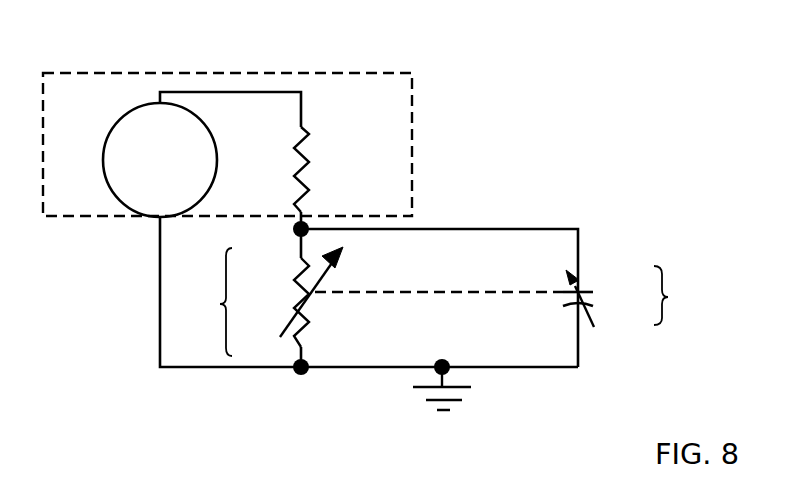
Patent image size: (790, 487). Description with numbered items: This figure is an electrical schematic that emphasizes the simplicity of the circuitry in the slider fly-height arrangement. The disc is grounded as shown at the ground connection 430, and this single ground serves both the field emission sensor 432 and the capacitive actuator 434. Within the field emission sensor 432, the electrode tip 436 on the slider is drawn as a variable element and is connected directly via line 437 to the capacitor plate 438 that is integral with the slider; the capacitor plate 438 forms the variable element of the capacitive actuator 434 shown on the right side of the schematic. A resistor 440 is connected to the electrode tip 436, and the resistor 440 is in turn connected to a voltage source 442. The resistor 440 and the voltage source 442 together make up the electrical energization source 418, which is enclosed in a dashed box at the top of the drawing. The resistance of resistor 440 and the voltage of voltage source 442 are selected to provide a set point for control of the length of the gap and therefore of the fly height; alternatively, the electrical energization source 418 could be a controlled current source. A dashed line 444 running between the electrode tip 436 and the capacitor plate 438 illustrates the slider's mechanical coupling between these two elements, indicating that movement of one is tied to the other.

The electrical energization source 418 is at (413, 93).
The voltage source 442 is at (103, 162).
The resistor 440 is at (305, 158).
The line 437 is at (476, 229).
The electrode tip 436 is at (298, 262).
The field emission sensor 432 is at (203, 302).
The dashed line 444 is at (393, 292).
The capacitor plate 438 is at (582, 287).
The capacitive actuator 434 is at (693, 295).
The ground connection 430 is at (450, 370).